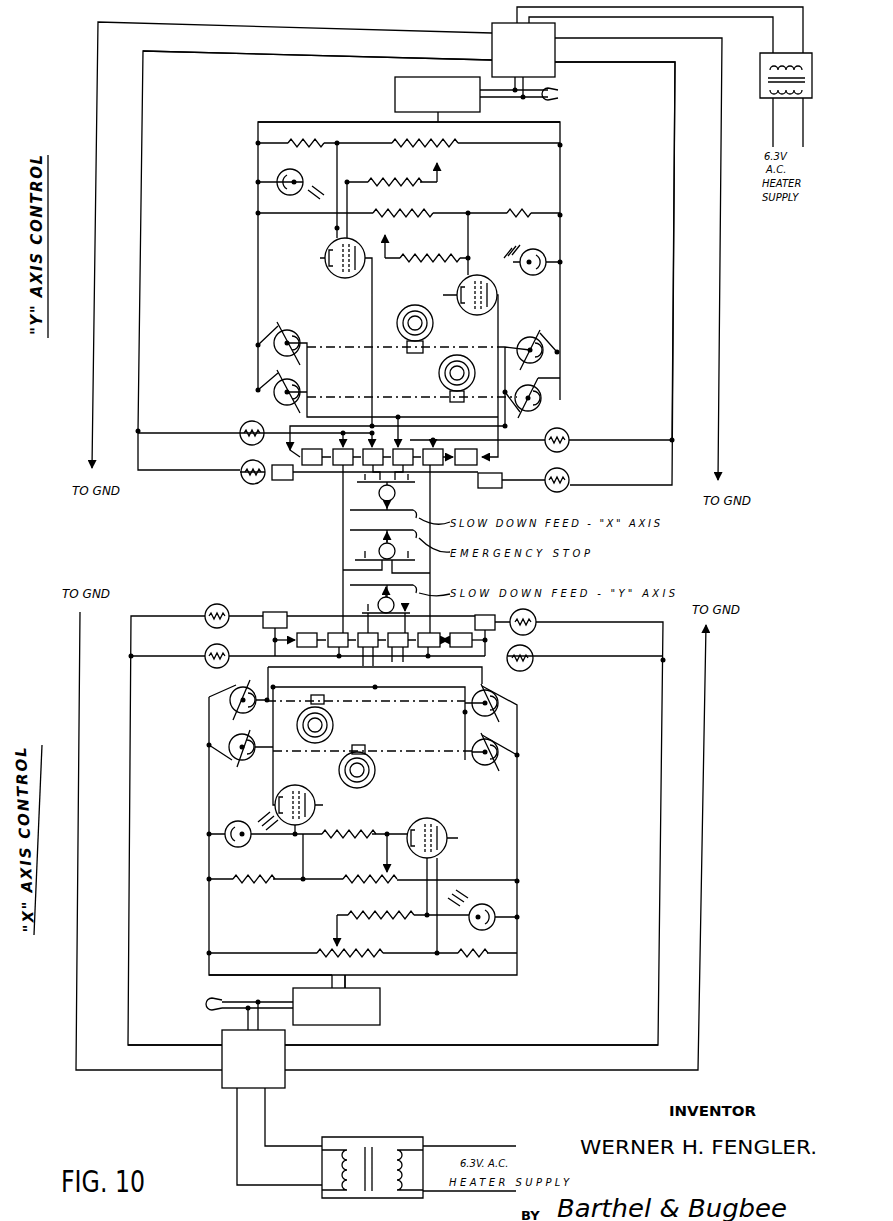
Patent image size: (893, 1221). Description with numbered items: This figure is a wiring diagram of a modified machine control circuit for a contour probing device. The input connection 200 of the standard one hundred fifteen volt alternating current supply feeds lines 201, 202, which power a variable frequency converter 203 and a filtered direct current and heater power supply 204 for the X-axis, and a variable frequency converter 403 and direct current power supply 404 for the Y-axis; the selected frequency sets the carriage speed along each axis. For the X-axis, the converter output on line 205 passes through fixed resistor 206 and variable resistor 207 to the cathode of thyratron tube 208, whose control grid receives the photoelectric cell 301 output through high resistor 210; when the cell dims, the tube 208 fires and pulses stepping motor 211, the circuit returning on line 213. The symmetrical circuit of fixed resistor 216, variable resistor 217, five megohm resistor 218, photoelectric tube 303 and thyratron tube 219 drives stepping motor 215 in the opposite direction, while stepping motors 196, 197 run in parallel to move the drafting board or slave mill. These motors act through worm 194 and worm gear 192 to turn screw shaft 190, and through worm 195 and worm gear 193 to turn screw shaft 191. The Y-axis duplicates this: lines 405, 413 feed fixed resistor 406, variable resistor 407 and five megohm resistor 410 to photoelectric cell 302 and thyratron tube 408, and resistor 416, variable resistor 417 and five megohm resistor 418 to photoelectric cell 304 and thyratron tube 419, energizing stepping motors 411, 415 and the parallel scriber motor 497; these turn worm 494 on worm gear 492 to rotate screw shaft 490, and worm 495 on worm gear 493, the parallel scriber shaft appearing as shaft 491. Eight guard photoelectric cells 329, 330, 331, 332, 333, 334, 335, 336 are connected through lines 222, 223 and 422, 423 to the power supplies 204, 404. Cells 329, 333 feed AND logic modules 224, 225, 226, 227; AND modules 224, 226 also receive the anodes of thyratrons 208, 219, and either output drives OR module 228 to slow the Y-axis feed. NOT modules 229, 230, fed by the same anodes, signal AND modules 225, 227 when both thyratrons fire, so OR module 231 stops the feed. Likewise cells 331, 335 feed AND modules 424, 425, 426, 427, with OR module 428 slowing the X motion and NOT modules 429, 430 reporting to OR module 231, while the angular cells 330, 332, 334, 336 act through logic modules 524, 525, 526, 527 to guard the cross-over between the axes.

The line 422 is at (278, 52).
The line 423 is at (620, 65).
The direct current power supply 404 is at (492, 45).
The variable frequency converter 403 is at (395, 92).
The input connection 200 is at (560, 94).
The line 201 is at (545, 100).
The line 202 is at (505, 100).
The line 405 is at (340, 122).
The line 413 is at (560, 128).
The fixed resistor 406 is at (316, 146).
The variable resistor 407 is at (445, 150).
The five megohm resistor 410 is at (400, 186).
The photoelectric cell 302 is at (280, 194).
The resistor 416 is at (538, 204).
The variable resistor 417 is at (412, 224).
The thyratron tube 408 is at (320, 262).
The five megohm resistor 418 is at (405, 266).
The photoelectric cell 304 is at (548, 268).
The thyratron tube 419 is at (490, 310).
The screw shaft 490 is at (410, 310).
The worm gear 492 is at (433, 330).
The worm 494 is at (408, 353).
The gear 491 is at (478, 366).
The worm gear 493 is at (440, 378).
The worm 495 is at (450, 402).
The stepping motor 415 is at (295, 333).
The stepping motor 497 is at (258, 390).
The stepping motor 411 is at (557, 352).
The stepping motor 196 is at (560, 396).
The photoelectric cell 331 is at (242, 428).
The photoelectric cell 332 is at (243, 468).
The photoelectric cell 335 is at (568, 433).
The photoelectric cell 336 is at (568, 473).
The logic module 527 is at (284, 480).
The logic module 525 is at (496, 488).
The NOT logic module 429 is at (312, 457).
The AND logic module 425 is at (343, 457).
The AND logic module 424 is at (373, 457).
The AND logic module 426 is at (403, 457).
The AND logic module 427 is at (433, 457).
The NOT logic module 430 is at (466, 457).
The OR logic module 428 is at (405, 496).
The OR logic module 231 is at (379, 551).
The OR logic module 228 is at (292, 598).
The photoelectric cell 330 is at (222, 604).
The photoelectric cell 333 is at (212, 648).
The logic module 526 is at (288, 612).
The logic module 524 is at (486, 615).
The photoelectric cell 334 is at (535, 611).
The photoelectric cell 329 is at (532, 670).
The NOT logic module 230 is at (307, 640).
The AND logic module 227 is at (338, 640).
The AND logic module 224 is at (368, 640).
The AND logic module 226 is at (398, 640).
The AND logic module 225 is at (429, 640).
The NOT logic module 229 is at (461, 640).
The worm 195 is at (324, 695).
The screw shaft 191 is at (330, 714).
The worm gear 193 is at (333, 728).
The stepping motor 211 is at (232, 734).
The worm 194 is at (365, 750).
The worm gear 192 is at (345, 788).
The screw shaft 190 is at (375, 775).
The stepping motor 197 is at (498, 713).
The stepping motor 215 is at (498, 762).
The thyratron tube 219 is at (322, 778).
The photoelectric tube 303 is at (237, 821).
The thyratron tube 208 is at (436, 820).
The five megohm resistor 218 is at (335, 842).
The fixed resistor 216 is at (245, 886).
The variable resistor 217 is at (370, 886).
The high resistor 210 is at (372, 920).
The photoelectric cell 301 is at (497, 910).
The variable resistor 207 is at (360, 960).
The line 213 is at (285, 975).
The fixed resistor 206 is at (478, 962).
The line 205 is at (350, 980).
The variable frequency converter 203 is at (380, 1018).
The power supply 204 is at (222, 1085).
The line 223 is at (162, 1050).
The line 222 is at (440, 1047).